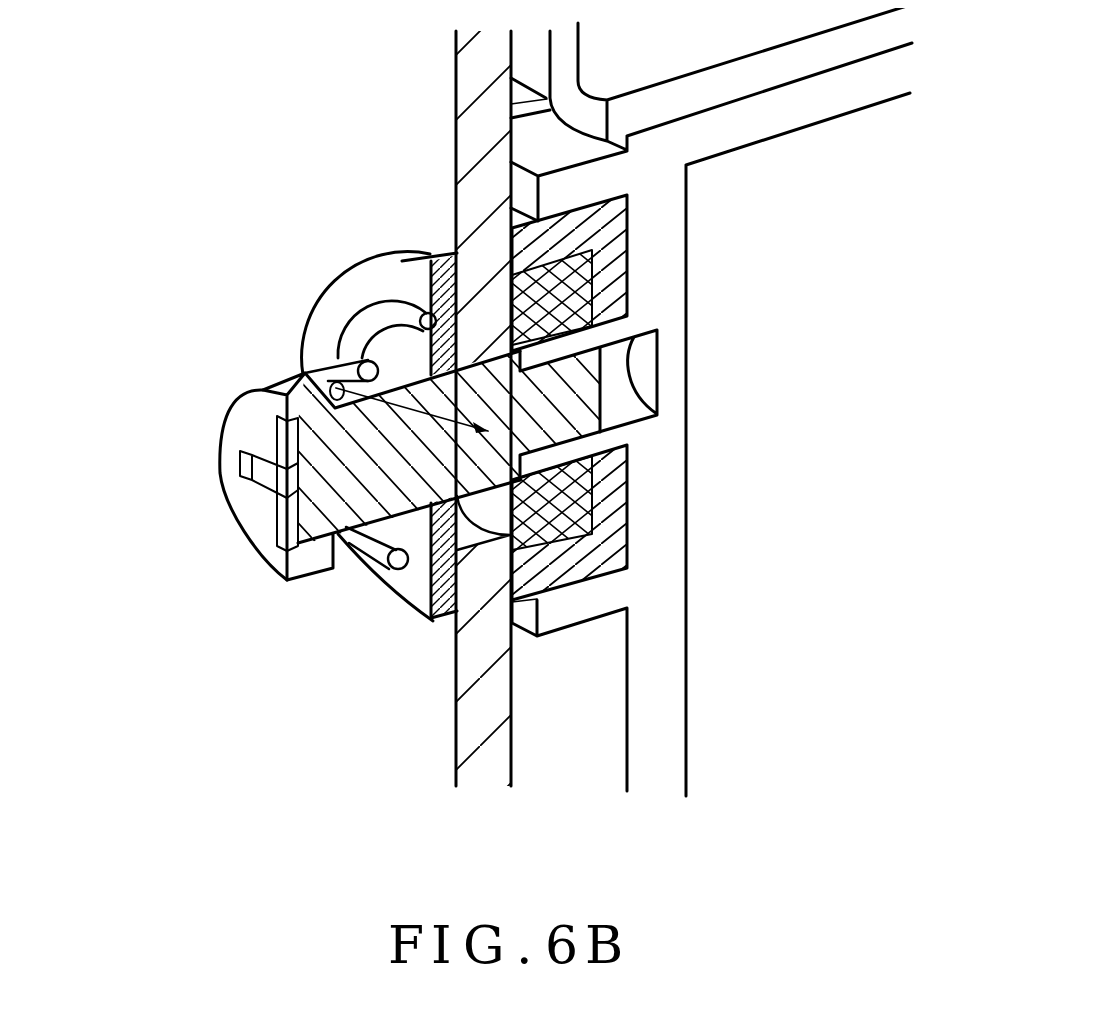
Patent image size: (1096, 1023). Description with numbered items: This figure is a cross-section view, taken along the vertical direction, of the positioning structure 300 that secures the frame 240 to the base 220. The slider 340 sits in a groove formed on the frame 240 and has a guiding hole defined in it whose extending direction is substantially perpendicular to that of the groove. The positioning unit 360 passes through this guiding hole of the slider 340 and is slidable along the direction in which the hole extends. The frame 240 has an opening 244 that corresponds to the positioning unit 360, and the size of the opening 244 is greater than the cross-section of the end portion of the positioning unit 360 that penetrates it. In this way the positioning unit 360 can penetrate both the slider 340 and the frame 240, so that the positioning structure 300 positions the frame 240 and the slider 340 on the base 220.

The positioning structure 300 is at (176, 214).
The frame 240 is at (478, 118).
The opening 244 is at (325, 385).
The positioning unit 360 is at (263, 418).
The base 220 is at (660, 265).
The slider 340 is at (548, 300).